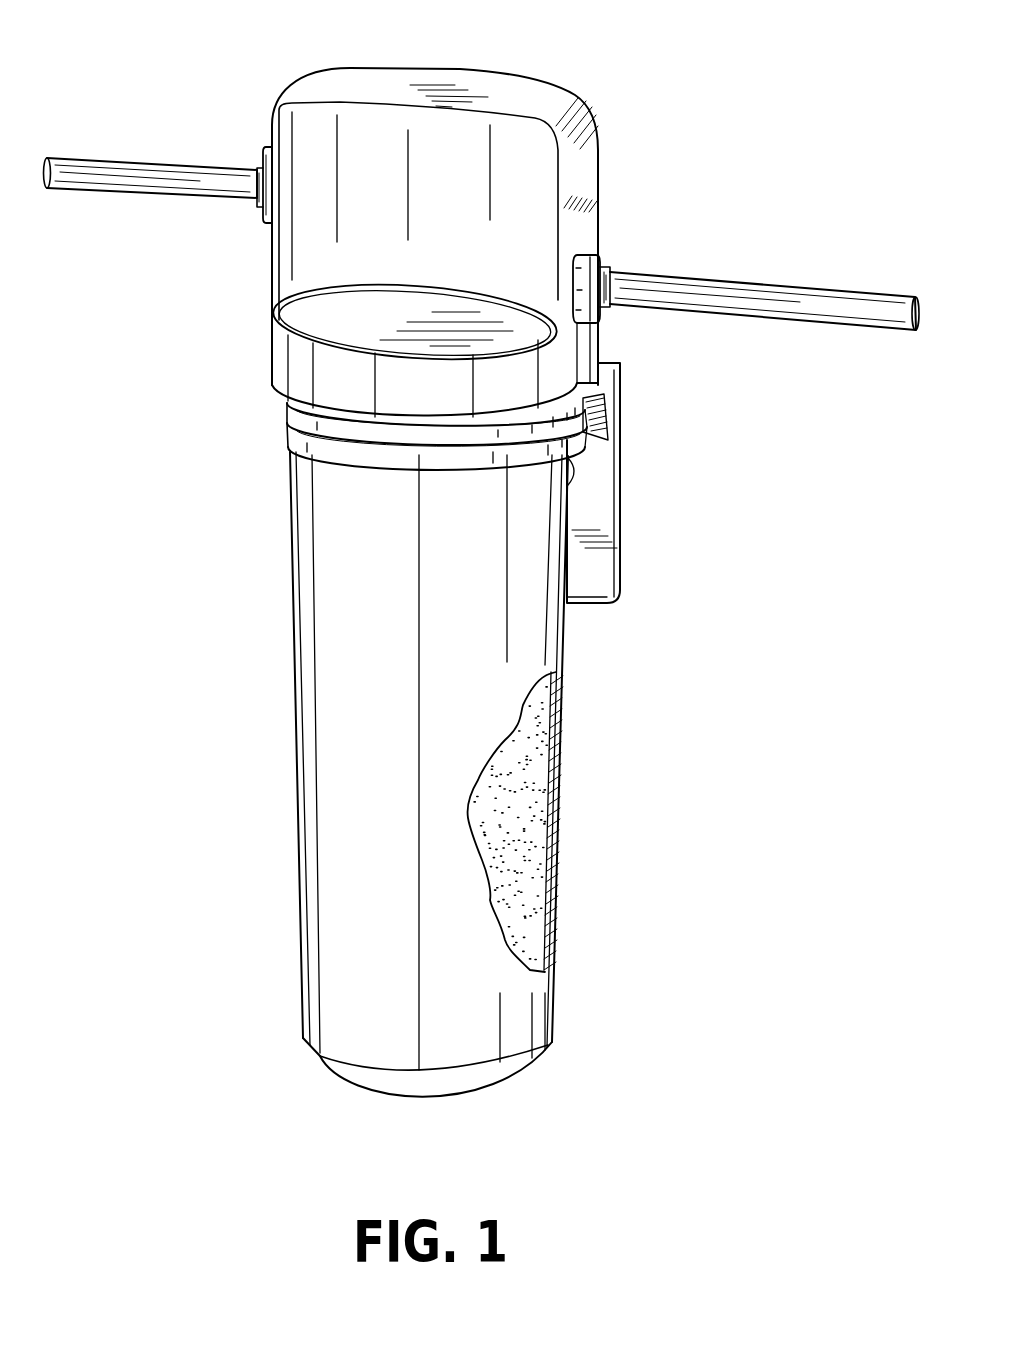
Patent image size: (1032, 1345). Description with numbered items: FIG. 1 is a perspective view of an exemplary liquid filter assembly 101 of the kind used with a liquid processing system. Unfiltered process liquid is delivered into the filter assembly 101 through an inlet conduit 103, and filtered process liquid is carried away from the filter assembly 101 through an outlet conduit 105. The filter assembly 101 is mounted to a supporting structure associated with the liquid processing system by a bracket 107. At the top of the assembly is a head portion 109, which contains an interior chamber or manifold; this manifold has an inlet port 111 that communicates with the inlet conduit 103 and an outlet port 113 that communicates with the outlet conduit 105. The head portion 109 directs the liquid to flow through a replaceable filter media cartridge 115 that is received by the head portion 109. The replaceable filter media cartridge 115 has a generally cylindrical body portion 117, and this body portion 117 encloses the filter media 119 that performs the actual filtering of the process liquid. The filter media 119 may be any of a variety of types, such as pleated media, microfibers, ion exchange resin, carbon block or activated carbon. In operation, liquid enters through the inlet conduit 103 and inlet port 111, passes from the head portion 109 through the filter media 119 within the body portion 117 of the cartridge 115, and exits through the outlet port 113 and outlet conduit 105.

The filter assembly 101 is at (640, 212).
The inlet conduit 103 is at (762, 302).
The outlet conduit 105 is at (115, 178).
The bracket 107 is at (602, 498).
The head portion 109 is at (366, 93).
The inlet port 111 is at (608, 263).
The outlet port 113 is at (264, 156).
The replaceable filter media cartridge 115 is at (335, 818).
The body portion 117 is at (512, 981).
The filter media 119 is at (518, 815).